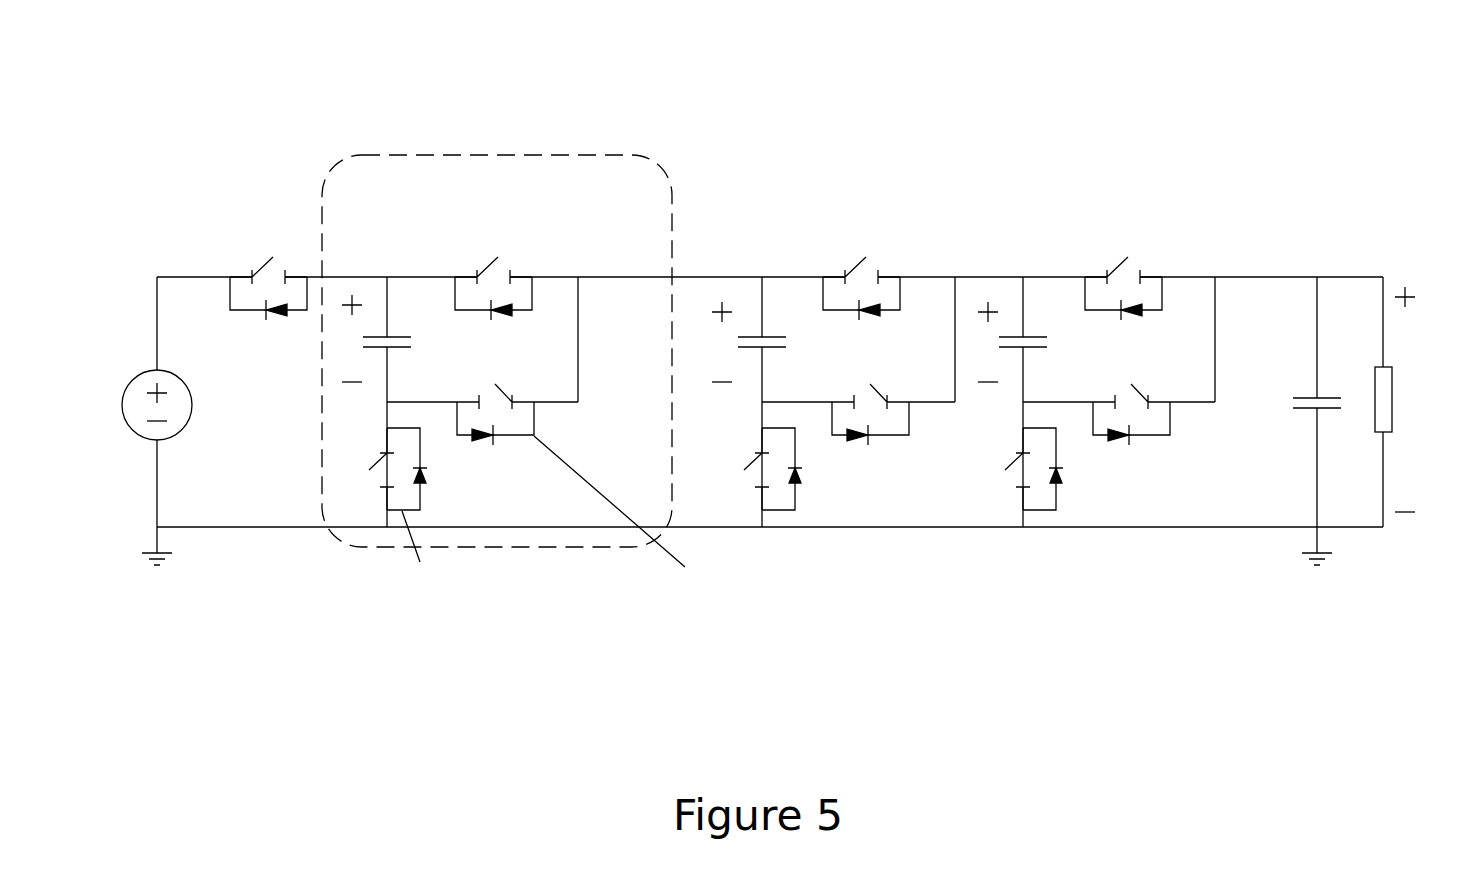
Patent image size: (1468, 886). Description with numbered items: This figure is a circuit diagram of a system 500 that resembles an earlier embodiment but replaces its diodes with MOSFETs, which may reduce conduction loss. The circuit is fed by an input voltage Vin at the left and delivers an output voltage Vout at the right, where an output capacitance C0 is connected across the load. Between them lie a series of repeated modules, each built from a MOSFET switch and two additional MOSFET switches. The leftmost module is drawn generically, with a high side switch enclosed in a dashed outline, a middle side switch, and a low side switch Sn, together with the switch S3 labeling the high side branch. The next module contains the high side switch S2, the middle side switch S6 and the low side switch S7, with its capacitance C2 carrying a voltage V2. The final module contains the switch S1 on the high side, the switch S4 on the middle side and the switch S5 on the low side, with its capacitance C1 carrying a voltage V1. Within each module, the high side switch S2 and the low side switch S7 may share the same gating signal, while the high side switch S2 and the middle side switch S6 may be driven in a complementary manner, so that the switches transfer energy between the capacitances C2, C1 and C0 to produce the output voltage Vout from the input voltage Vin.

The system 500 is at (766, 311).
The switch S1 is at (1123, 268).
The high side switch S2 is at (861, 268).
The switch S3 is at (507, 304).
The switch S4 is at (1154, 416).
The switch S5 is at (1056, 477).
The middle side switch S6 is at (871, 402).
The low side switch S7 is at (760, 464).
The switch Sn is at (382, 469).
The capacitance C0 is at (1299, 411).
The capacitance C1 is at (1044, 353).
The capacitance C2 is at (780, 353).
The voltage V1 is at (981, 342).
The voltage V2 is at (714, 342).
The input voltage Vin is at (135, 405).
The output voltage Vout is at (1415, 399).